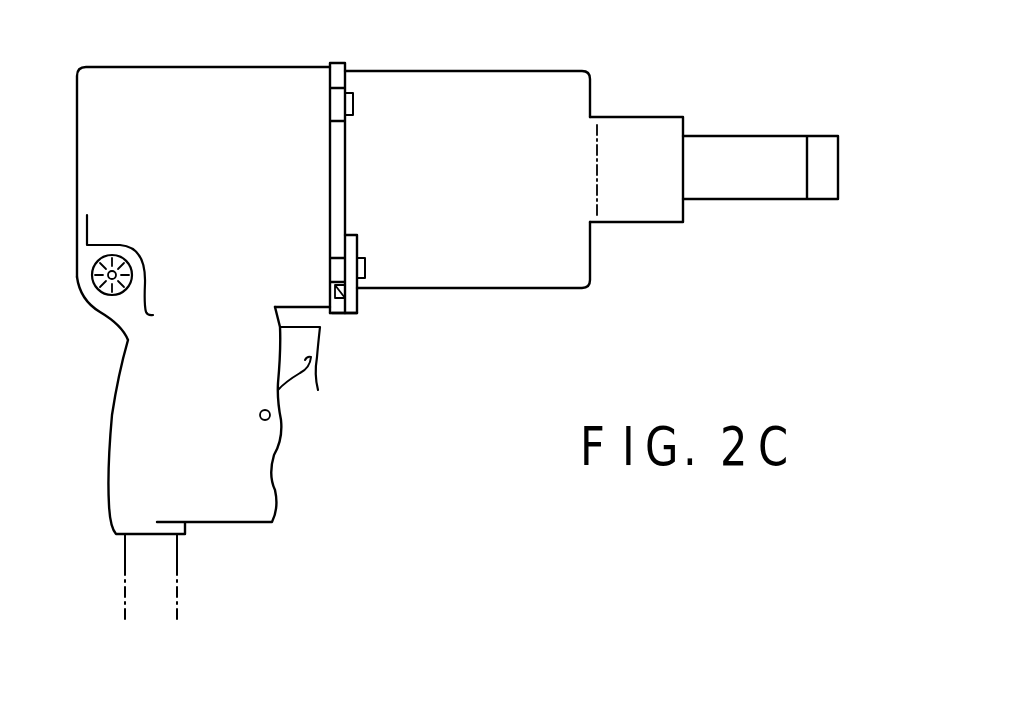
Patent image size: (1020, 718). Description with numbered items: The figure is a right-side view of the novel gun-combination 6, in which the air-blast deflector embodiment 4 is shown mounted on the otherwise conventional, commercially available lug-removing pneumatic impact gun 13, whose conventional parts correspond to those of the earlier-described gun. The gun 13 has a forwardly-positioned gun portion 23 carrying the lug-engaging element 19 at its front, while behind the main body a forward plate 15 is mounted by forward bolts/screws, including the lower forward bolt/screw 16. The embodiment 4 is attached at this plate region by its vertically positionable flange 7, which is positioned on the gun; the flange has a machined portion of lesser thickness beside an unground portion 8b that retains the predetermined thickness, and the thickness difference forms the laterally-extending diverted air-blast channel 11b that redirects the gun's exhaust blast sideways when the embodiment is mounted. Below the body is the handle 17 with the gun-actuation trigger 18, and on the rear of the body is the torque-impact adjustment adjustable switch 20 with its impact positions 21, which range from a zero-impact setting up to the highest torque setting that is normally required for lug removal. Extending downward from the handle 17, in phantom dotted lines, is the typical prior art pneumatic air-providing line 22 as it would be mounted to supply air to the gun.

The gun-combination 6 is at (727, 78).
The embodiment 4 is at (397, 319).
The lug-removing pneumatic impact gun 13 is at (299, 22).
The forwardly-positioned gun portion 23 is at (547, 272).
The forward plate 15 is at (415, 99).
The vertically positionable flange 7 is at (400, 175).
The lower forward bolt/screw 16 is at (448, 218).
The right diverted air-blast channel 11b is at (333, 290).
The unground portion 8b is at (347, 317).
The lug-engaging element 19 is at (897, 151).
The torque-impact adjustment adjustable switch 20 is at (110, 288).
The impact positions 21 is at (180, 145).
The handle 17 is at (339, 475).
The gun-actuation trigger 18 is at (352, 399).
The pneumatic air-providing line 22 is at (253, 585).